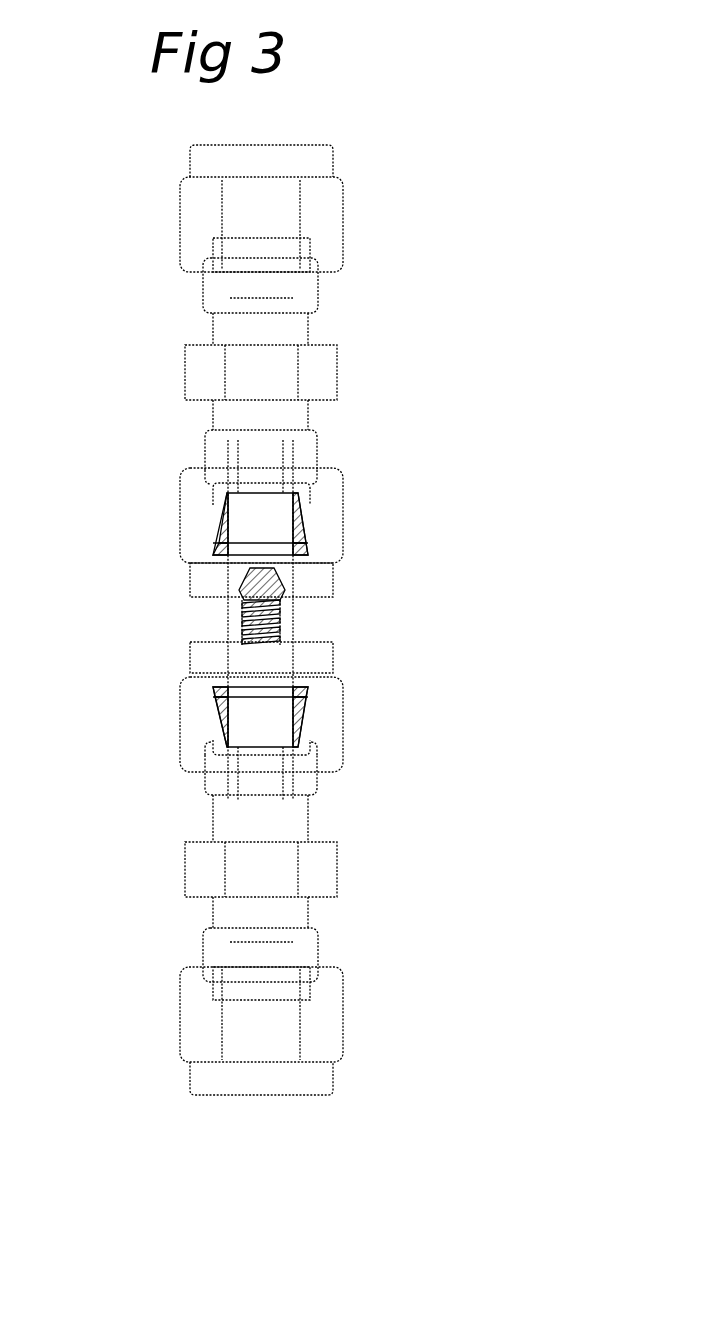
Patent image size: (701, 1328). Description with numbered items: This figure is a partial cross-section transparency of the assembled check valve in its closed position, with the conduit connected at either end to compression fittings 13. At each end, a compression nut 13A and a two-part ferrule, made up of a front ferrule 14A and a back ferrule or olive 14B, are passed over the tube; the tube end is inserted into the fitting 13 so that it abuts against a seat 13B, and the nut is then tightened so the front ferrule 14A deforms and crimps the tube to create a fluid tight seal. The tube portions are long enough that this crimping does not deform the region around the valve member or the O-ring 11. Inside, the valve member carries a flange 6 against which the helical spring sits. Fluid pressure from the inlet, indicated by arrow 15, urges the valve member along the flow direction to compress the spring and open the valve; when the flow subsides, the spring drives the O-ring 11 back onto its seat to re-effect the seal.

The flange 6 is at (285, 640).
The O-ring 11 is at (250, 580).
The compression fitting 13 is at (378, 378).
The compression nut 13A is at (185, 490).
The seat 13B is at (235, 438).
The front ferrule 14A is at (300, 516).
The back ferrule 14B is at (305, 553).
The arrow 15 is at (263, 1120).